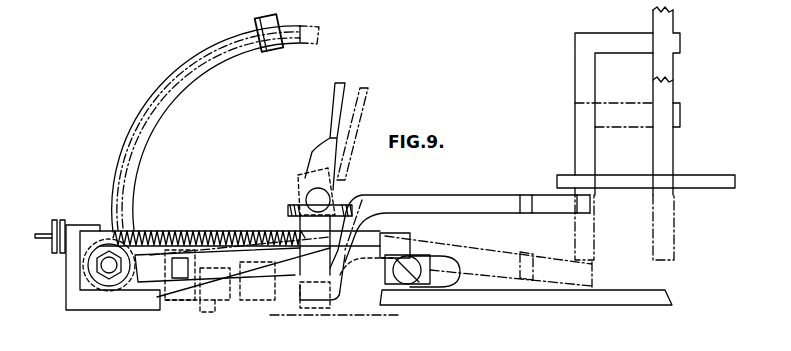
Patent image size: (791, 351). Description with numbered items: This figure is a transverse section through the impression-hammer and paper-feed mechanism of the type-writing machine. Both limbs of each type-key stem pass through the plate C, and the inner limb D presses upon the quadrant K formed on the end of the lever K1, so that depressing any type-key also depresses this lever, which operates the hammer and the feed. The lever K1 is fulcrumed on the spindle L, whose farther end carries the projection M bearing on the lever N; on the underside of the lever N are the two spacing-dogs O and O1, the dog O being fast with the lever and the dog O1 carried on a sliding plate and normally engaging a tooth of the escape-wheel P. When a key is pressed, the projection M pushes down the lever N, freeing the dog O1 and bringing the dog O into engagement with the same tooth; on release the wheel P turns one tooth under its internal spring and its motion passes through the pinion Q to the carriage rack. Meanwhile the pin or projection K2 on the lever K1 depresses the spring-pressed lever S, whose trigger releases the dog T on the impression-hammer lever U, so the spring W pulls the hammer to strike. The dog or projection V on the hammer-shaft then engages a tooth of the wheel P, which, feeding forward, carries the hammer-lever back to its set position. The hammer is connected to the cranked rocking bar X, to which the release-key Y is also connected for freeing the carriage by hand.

The impression-hammer lever U is at (153, 116).
The spindle L is at (100, 266).
The spring W is at (240, 230).
The projection M is at (150, 243).
The lever N is at (183, 252).
The dog O is at (205, 262).
The dog O1 is at (203, 287).
The pin or projection K2 is at (268, 279).
The release-key Y is at (340, 88).
The rocking bar X is at (329, 195).
The pinion Q is at (295, 210).
The lever K1 is at (484, 201).
The quadrant K is at (556, 213).
The escape-wheel P is at (375, 254).
The dog or projection V is at (350, 262).
The dog T is at (340, 290).
The lever S is at (300, 292).
The inner limb D is at (593, 38).
The plate C is at (646, 174).